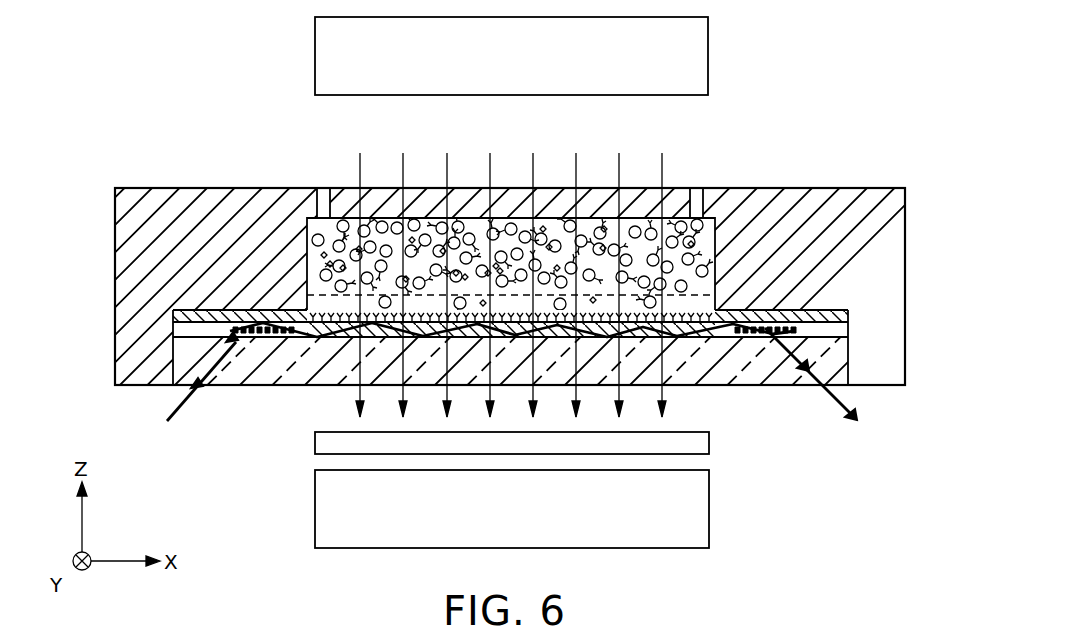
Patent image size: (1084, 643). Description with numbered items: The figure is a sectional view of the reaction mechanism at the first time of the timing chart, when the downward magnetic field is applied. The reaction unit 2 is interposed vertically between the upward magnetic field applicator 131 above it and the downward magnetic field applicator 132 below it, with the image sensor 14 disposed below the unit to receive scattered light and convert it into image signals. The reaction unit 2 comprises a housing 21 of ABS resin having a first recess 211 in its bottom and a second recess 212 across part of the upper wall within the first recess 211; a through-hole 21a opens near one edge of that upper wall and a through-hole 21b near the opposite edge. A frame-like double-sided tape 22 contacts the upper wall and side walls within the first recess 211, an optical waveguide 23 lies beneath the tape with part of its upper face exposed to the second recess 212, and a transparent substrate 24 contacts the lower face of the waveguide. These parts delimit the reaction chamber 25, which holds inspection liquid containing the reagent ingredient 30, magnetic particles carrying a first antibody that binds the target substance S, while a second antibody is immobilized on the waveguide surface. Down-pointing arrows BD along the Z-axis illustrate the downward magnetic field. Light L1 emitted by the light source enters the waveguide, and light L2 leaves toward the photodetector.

The reaction unit 2 is at (840, 138).
The housing 21 is at (888, 279).
The through-hole 21a is at (316, 212).
The through-hole 21b is at (696, 196).
The first recess 211 is at (170, 365).
The second recess 212 is at (305, 226).
The double-sided tape 22 is at (848, 313).
The optical waveguide 23 is at (848, 329).
The transparent substrate 24 is at (848, 358).
The reaction chamber 25 is at (706, 288).
The reagent ingredient 30 is at (650, 226).
The target substance S is at (551, 216).
The downward magnetic field arrows BD is at (360, 171).
The light L1 is at (183, 409).
The light L2 is at (822, 397).
The image sensor 14 is at (709, 437).
The upward magnetic field applicator 131 is at (708, 52).
The downward magnetic field applicator 132 is at (709, 507).